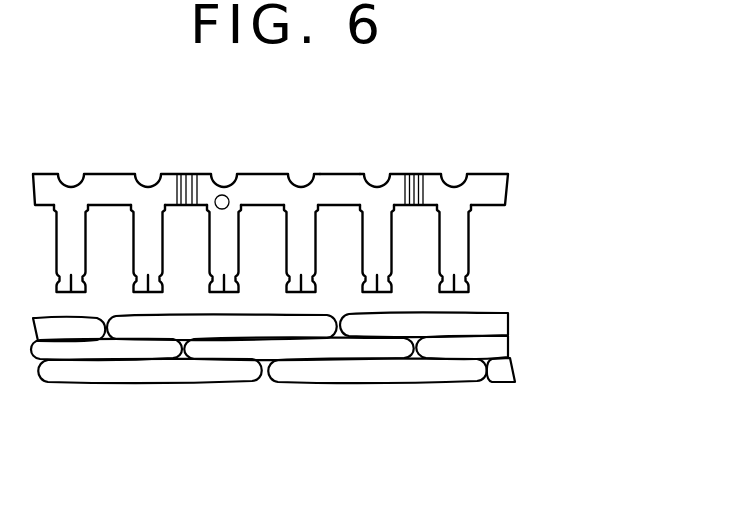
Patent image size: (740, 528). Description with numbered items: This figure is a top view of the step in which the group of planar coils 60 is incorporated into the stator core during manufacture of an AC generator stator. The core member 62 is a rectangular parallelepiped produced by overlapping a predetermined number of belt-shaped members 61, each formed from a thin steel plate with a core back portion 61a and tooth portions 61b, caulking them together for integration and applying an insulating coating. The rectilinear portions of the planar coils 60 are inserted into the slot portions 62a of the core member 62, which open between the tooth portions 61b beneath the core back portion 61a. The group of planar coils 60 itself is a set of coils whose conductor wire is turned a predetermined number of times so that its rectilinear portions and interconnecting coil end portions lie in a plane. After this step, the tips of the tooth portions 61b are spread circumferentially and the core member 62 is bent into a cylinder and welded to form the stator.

The group of planar coils 60 is at (497, 312).
The belt-shaped member 61 is at (432, 119).
The core back portion 61a is at (338, 183).
The tooth portion 61b is at (377, 222).
The core member 62 is at (498, 171).
The slot portion 62a is at (427, 241).